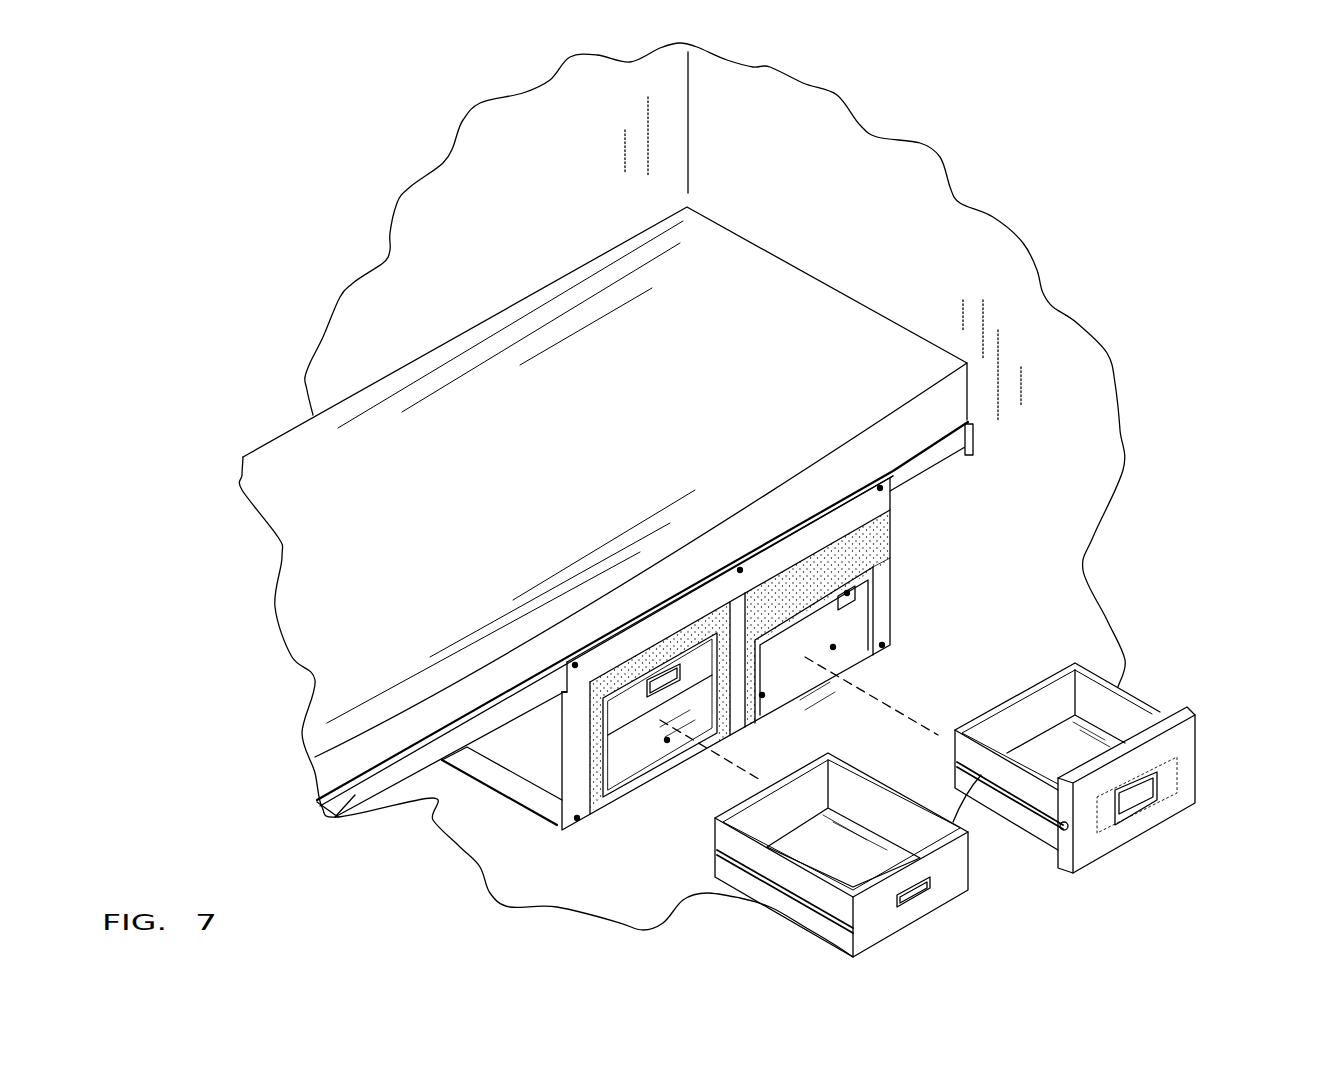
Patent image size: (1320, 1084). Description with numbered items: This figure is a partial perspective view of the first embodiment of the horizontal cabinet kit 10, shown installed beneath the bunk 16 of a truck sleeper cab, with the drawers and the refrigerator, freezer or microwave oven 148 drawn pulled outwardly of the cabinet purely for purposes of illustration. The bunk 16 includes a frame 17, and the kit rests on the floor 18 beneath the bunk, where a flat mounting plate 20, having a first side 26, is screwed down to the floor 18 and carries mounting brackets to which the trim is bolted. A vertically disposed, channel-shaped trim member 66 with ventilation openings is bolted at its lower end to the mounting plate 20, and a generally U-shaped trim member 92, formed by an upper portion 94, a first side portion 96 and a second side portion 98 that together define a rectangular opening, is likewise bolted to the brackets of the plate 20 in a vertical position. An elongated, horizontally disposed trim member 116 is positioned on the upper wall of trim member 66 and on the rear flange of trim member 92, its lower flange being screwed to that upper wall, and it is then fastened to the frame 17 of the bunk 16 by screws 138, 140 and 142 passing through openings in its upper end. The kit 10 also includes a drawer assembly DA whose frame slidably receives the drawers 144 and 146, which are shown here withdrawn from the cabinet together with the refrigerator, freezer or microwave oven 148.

The horizontal cabinet kit 10 is at (563, 920).
The bunk 16 is at (320, 545).
The frame 17 is at (322, 808).
The floor 18 is at (654, 885).
The mounting plate 20 is at (626, 752).
The first side 26 is at (520, 816).
The trim member 66 is at (563, 831).
The trim member 92 is at (890, 529).
The upper portion 94 is at (872, 551).
The first side portion 96 is at (744, 682).
The second side portion 98 is at (884, 588).
The trim member 116 is at (660, 609).
The screw 138 is at (570, 660).
The screw 140 is at (741, 566).
The screw 142 is at (888, 498).
The drawer 144 is at (691, 660).
The drawer 146 is at (950, 883).
The refrigerator, freezer or microwave oven 148 is at (1177, 742).
The drawer assembly DA is at (769, 918).